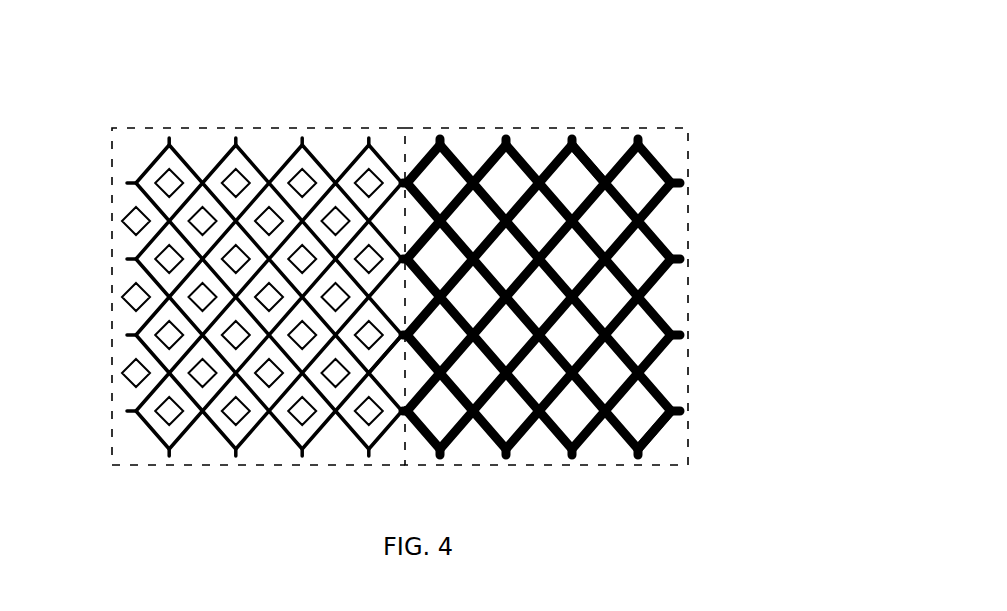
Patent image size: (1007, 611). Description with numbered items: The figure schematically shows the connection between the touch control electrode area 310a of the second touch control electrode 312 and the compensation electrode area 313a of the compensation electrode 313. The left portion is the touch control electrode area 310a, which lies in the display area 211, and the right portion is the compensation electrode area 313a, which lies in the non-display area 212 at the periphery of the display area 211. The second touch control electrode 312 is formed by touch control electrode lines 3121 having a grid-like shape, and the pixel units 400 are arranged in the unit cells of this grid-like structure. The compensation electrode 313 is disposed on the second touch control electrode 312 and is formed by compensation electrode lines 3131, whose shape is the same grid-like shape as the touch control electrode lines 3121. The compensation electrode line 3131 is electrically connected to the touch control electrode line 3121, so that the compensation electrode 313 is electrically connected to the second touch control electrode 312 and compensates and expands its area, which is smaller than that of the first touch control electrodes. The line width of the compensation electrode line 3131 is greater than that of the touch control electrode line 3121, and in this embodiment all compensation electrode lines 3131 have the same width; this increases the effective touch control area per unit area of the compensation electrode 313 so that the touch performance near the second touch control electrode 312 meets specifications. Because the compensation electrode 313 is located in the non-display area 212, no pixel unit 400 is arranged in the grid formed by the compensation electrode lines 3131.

The touch control electrode area 310a is at (210, 127).
The compensation electrode area 313a is at (513, 128).
The second touch control electrode 312 is at (378, 219).
The touch control electrode line 3121 is at (152, 167).
The pixel unit 400 is at (352, 298).
The display area 211 is at (387, 372).
The compensation electrode 313 is at (656, 160).
The compensation electrode line 3131 is at (580, 155).
The non-display area 212 is at (661, 445).